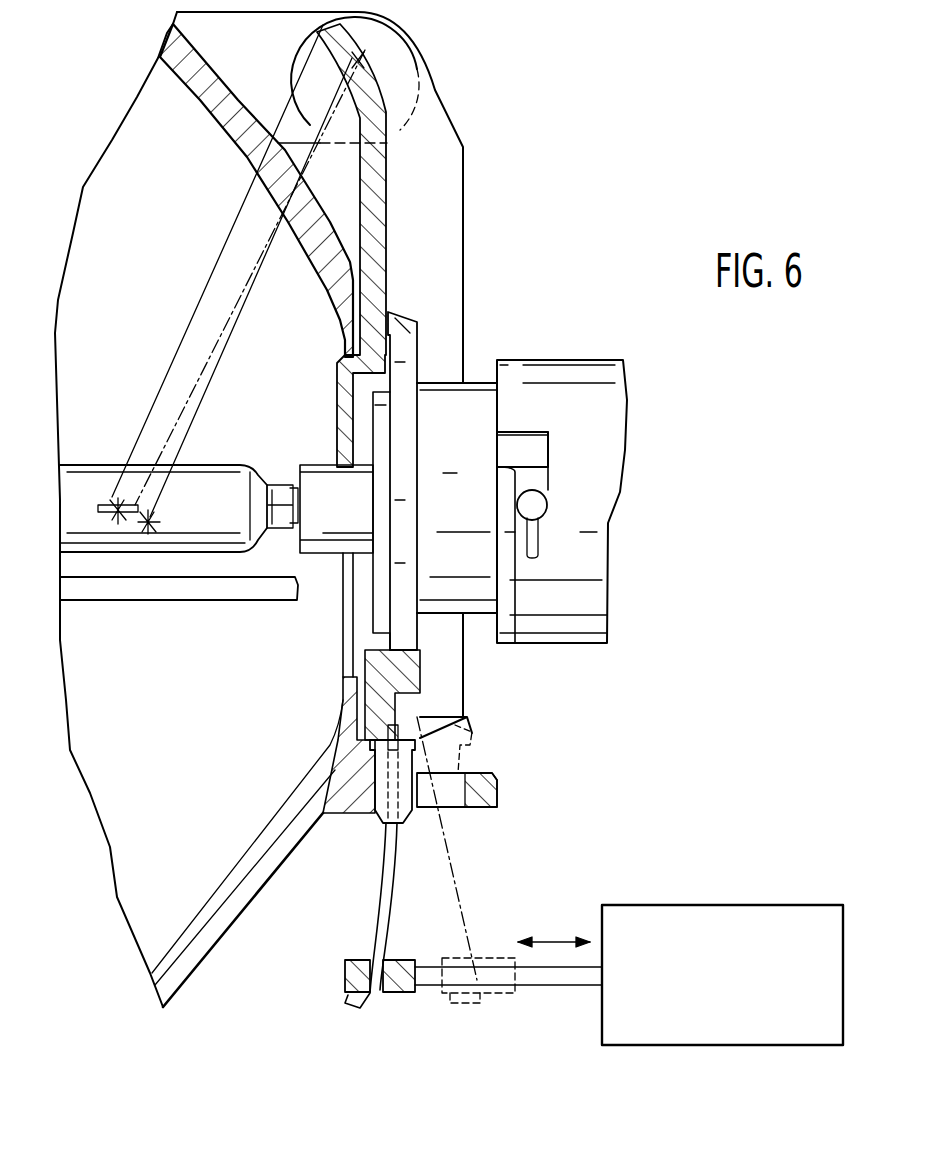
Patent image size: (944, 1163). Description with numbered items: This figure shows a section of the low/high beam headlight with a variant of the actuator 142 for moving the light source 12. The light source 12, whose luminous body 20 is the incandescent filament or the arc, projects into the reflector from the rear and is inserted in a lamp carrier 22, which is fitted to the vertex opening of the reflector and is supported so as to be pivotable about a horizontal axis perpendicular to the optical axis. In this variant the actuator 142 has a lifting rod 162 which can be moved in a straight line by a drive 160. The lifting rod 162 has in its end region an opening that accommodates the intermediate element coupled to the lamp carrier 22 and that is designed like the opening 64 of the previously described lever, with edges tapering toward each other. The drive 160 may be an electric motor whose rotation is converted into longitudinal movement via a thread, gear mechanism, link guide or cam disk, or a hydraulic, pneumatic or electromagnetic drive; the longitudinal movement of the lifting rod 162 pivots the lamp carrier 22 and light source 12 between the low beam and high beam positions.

The light source 12 is at (508, 318).
The luminous body 20 is at (110, 503).
The lamp carrier 22 is at (388, 193).
The opening 64 is at (386, 995).
The actuator 142 is at (713, 876).
The drive 160 is at (718, 1035).
The lifting rod 162 is at (558, 985).